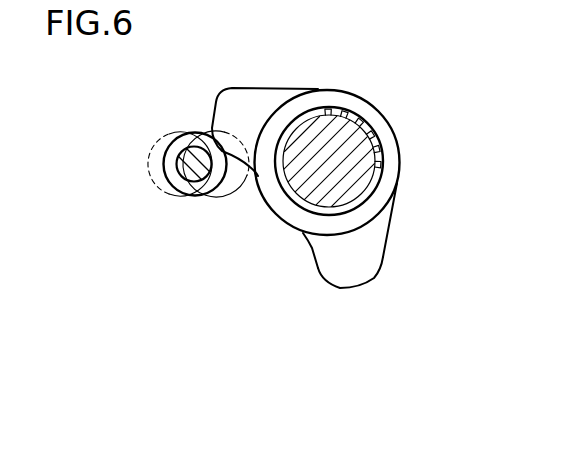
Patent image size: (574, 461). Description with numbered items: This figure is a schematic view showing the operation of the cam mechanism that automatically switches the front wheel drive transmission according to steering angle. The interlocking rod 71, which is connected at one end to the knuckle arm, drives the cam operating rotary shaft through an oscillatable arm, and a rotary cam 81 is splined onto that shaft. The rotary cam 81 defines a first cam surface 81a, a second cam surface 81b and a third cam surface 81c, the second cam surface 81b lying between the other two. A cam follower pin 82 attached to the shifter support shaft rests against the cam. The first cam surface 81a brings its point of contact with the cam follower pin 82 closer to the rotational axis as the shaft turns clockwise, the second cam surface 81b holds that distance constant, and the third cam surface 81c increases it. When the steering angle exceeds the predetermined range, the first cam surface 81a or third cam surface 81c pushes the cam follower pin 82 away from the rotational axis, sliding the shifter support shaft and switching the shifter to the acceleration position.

The interlocking rod 71 is at (302, 138).
The rotary cam 81 is at (377, 247).
The first cam surface 81a is at (246, 180).
The second cam surface 81b is at (283, 223).
The third cam surface 81c is at (318, 270).
The cam follower pin 82 is at (197, 197).